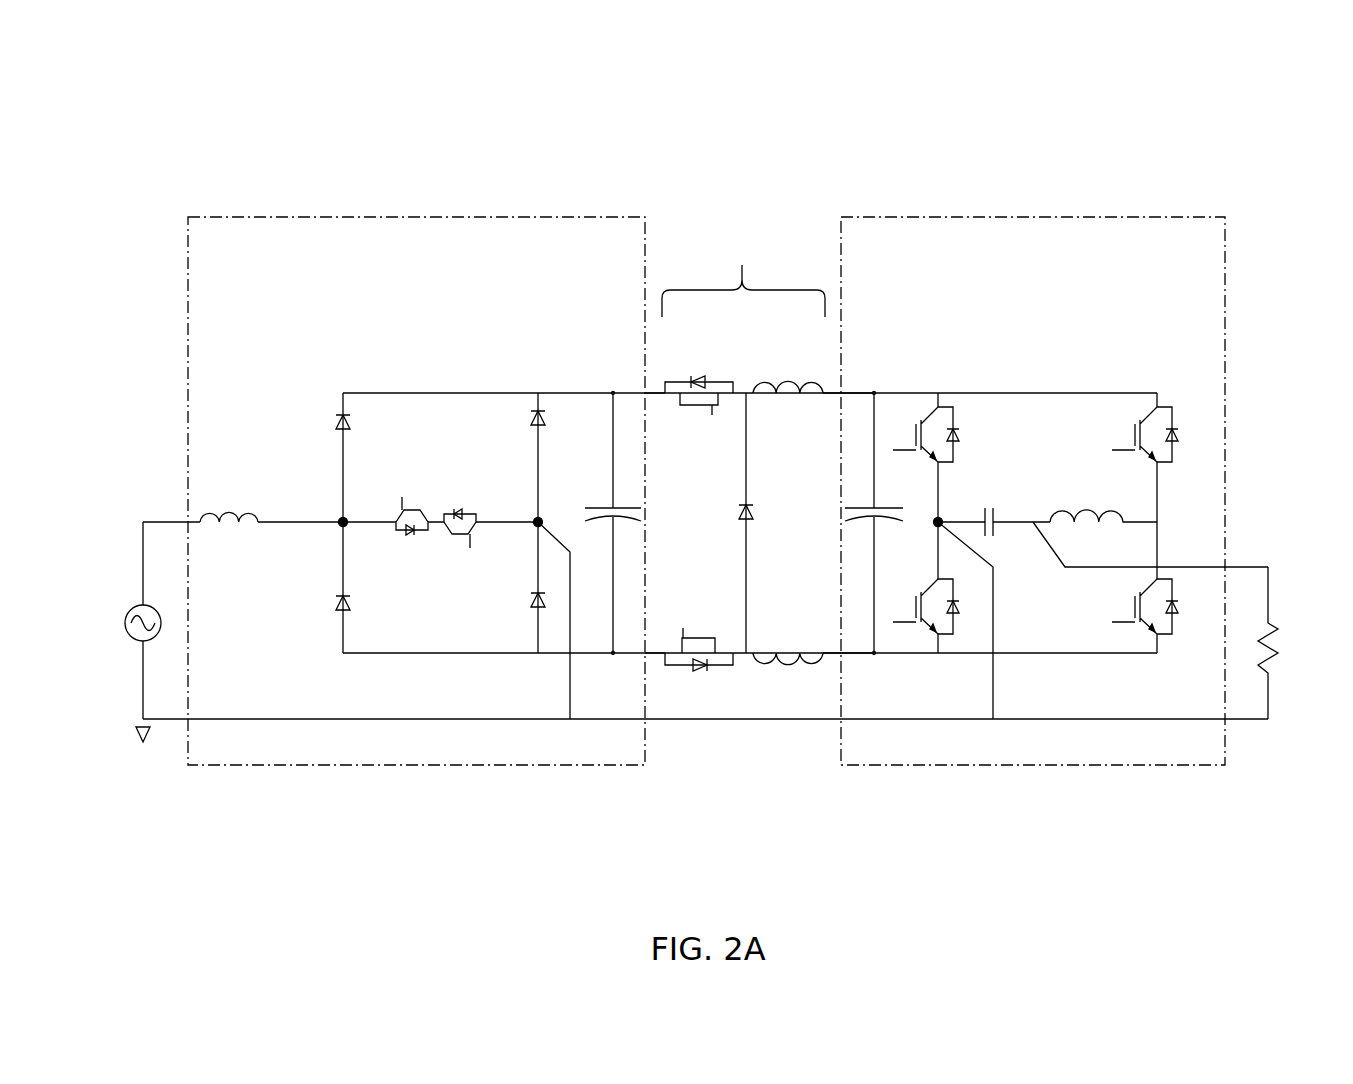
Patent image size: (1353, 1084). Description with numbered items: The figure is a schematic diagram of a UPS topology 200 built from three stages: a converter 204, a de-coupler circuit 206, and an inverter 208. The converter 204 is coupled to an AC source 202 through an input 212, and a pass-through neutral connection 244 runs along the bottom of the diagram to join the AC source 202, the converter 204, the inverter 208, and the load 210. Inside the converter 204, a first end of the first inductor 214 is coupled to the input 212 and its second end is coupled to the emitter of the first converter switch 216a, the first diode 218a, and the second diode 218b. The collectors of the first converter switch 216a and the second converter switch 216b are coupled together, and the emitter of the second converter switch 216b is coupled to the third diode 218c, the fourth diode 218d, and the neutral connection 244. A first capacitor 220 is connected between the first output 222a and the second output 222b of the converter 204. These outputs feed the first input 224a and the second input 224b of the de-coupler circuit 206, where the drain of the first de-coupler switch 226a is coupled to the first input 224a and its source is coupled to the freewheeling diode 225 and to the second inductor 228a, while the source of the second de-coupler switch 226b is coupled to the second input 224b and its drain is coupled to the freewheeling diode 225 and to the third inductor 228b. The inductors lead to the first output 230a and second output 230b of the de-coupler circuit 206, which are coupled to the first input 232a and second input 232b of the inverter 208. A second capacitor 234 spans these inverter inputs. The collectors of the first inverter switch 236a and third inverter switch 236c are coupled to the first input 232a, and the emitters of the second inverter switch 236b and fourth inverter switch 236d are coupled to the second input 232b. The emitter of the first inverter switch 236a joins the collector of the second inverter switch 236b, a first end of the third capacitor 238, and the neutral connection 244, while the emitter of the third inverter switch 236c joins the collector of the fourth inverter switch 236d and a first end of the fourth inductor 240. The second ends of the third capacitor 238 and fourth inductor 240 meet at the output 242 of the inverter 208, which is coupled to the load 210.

The UPS topology 200 is at (1198, 100).
The AC source 202 is at (134, 632).
The converter 204 is at (390, 217).
The de-coupler circuit 206 is at (743, 276).
The inverter 208 is at (1055, 217).
The load 210 is at (1290, 643).
The input 212 is at (168, 517).
The first inductor 214 is at (229, 501).
The first converter switch 216a is at (410, 505).
The second converter switch 216b is at (468, 512).
The first diode 218a is at (314, 422).
The second diode 218b is at (314, 606).
The third diode 218c is at (511, 418).
The fourth diode 218d is at (510, 602).
The first capacitor 220 is at (607, 523).
The first output 222a is at (613, 393).
The second output 222b is at (613, 653).
The first input 224a is at (657, 395).
The second input 224b is at (661, 653).
The freewheeling diode 225 is at (723, 523).
The first de-coupler switch 226a is at (700, 378).
The second de-coupler switch 226b is at (699, 668).
The second inductor 228a is at (788, 369).
The third inductor 228b is at (788, 678).
The first output 230a is at (830, 395).
The second output 230b is at (828, 651).
The first input 232a is at (874, 393).
The second input 232b is at (874, 653).
The second capacitor 234 is at (880, 523).
The first inverter switch 236a is at (955, 434).
The second inverter switch 236b is at (920, 600).
The third inverter switch 236c is at (1125, 434).
The fourth inverter switch 236d is at (1124, 606).
The third capacitor 238 is at (994, 508).
The fourth inductor 240 is at (1103, 501).
The output 242 is at (1243, 567).
The pass-through neutral connection 244 is at (735, 719).